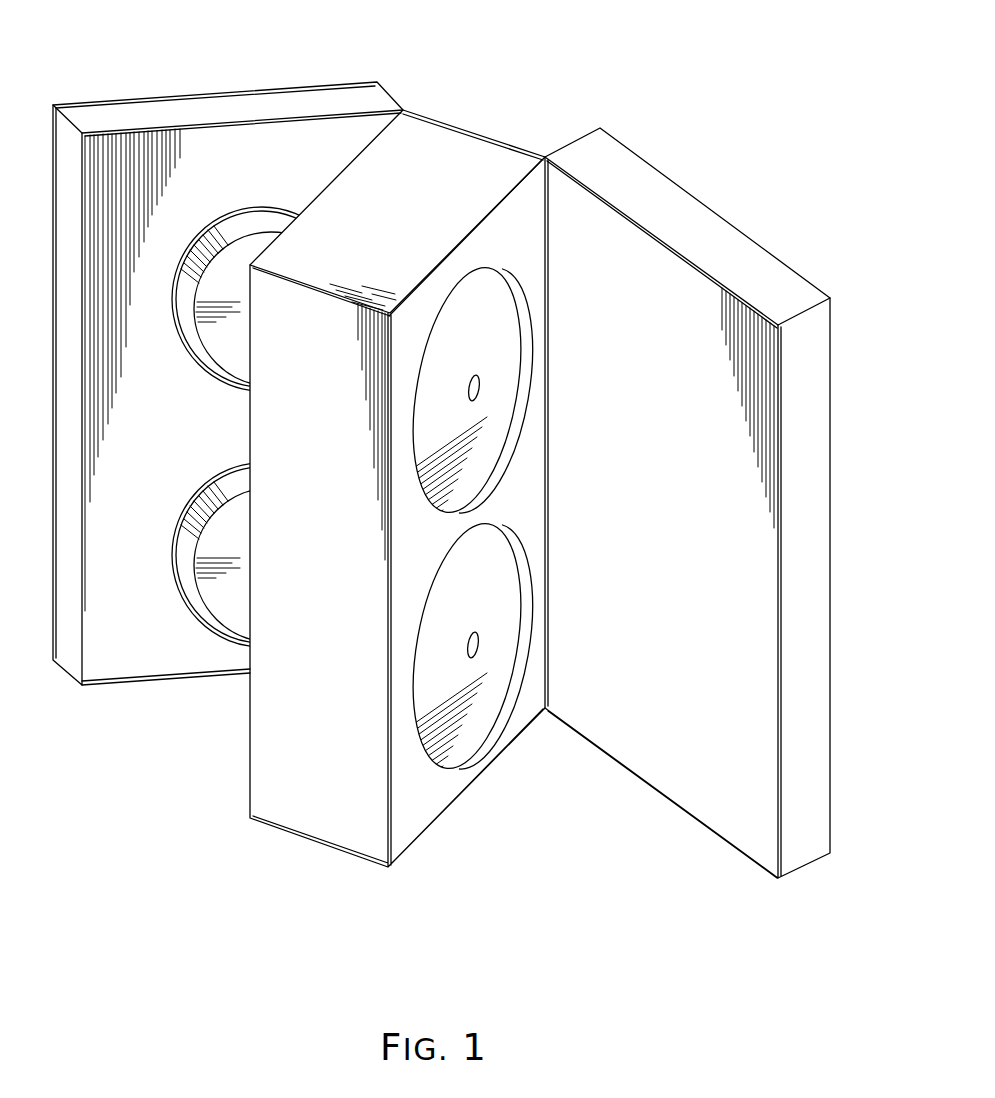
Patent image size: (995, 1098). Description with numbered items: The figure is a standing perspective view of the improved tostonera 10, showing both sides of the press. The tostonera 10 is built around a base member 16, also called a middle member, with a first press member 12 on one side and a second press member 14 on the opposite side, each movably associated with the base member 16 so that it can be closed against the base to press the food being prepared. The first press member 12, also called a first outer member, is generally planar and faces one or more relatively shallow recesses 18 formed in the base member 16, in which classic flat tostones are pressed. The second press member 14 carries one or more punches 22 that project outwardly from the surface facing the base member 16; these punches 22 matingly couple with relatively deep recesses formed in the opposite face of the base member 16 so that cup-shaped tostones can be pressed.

The tostonera 10 is at (645, 66).
The first press member 12 is at (143, 107).
The second press member 14 is at (708, 220).
The base member 16 is at (443, 140).
The shallow recesses 18 is at (483, 295).
The punches 22 is at (230, 230).